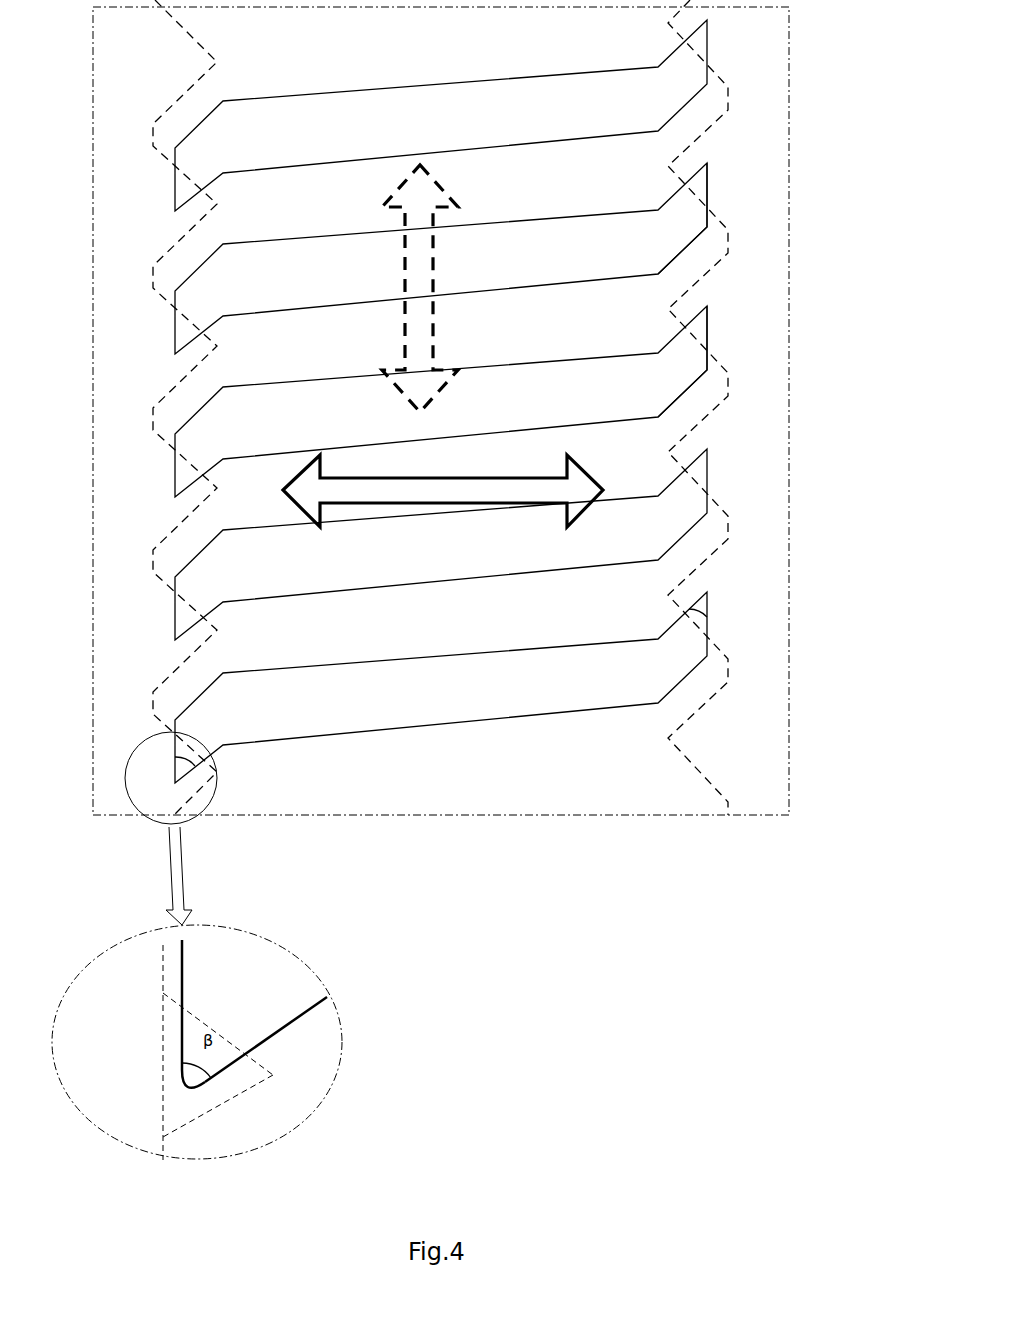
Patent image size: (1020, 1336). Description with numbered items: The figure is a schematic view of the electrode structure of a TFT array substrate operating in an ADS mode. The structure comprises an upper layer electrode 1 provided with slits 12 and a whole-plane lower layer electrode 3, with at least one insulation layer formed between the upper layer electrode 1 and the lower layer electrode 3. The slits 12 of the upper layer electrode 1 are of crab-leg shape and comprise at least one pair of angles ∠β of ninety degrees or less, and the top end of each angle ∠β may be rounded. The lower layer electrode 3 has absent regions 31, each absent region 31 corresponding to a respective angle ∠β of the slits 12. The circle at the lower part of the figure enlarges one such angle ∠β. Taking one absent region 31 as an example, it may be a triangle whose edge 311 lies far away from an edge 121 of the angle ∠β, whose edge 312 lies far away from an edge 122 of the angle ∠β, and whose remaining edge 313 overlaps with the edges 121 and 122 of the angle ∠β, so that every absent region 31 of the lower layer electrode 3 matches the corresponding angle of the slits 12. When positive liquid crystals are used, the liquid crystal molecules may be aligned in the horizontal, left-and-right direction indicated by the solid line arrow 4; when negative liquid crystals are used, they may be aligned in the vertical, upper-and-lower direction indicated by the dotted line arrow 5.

The upper layer electrode 1 is at (750, 712).
The lower layer electrode 3 is at (727, 652).
The absent region 31 is at (717, 305).
The slit 12 is at (685, 510).
The solid line arrow 4 is at (302, 467).
The dotted line arrow 5 is at (397, 327).
The edge of the angle ∠β 121 is at (182, 980).
The edge of the angle ∠β 122 is at (300, 1020).
The edge of the triangle 311 is at (163, 1063).
The edge of the triangle 312 is at (227, 1102).
The edge of the triangle 313 is at (222, 1037).